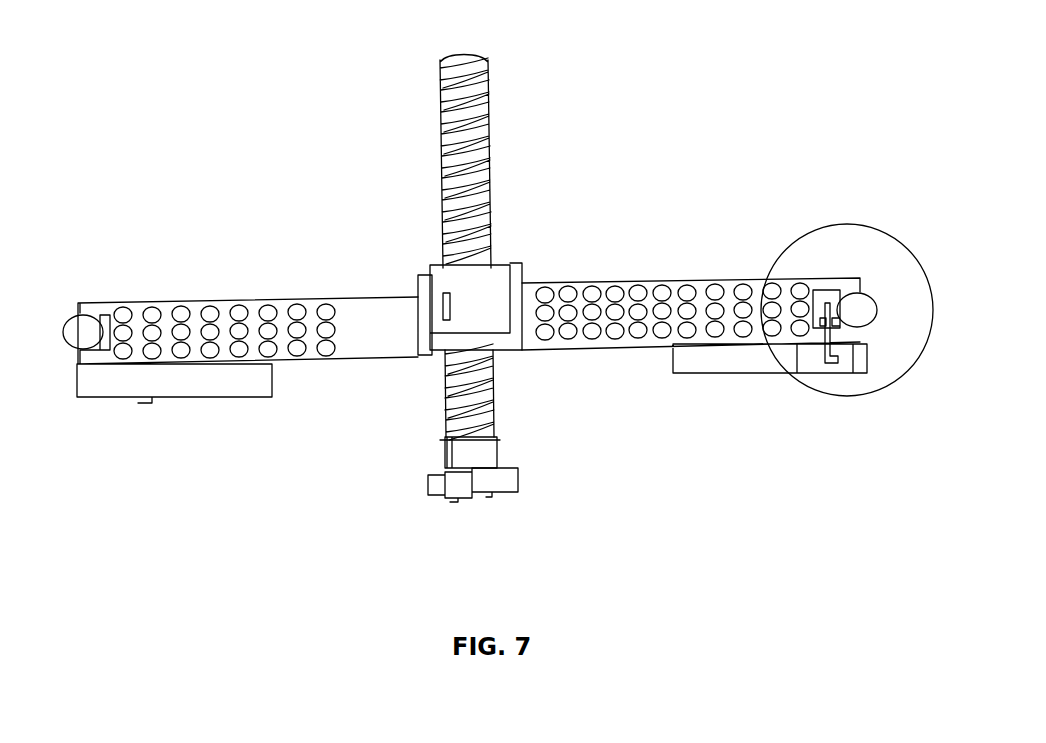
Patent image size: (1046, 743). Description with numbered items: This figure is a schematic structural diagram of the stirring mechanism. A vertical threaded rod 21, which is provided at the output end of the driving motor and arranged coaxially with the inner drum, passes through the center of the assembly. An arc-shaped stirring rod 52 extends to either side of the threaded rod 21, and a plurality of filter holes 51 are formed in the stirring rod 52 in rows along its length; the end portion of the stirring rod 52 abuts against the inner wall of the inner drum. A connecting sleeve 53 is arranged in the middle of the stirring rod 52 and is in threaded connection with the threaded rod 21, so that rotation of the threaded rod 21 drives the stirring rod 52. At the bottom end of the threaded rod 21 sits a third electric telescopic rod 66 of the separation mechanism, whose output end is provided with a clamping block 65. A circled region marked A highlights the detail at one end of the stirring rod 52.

The threaded rod 21 is at (473, 162).
The filter hole 51 is at (240, 308).
The stirring rod 52 is at (368, 315).
The connecting sleeve 53 is at (470, 305).
The clamping block 65 is at (443, 495).
The third electric telescopic rod 66 is at (485, 452).
The detail region A is at (870, 226).